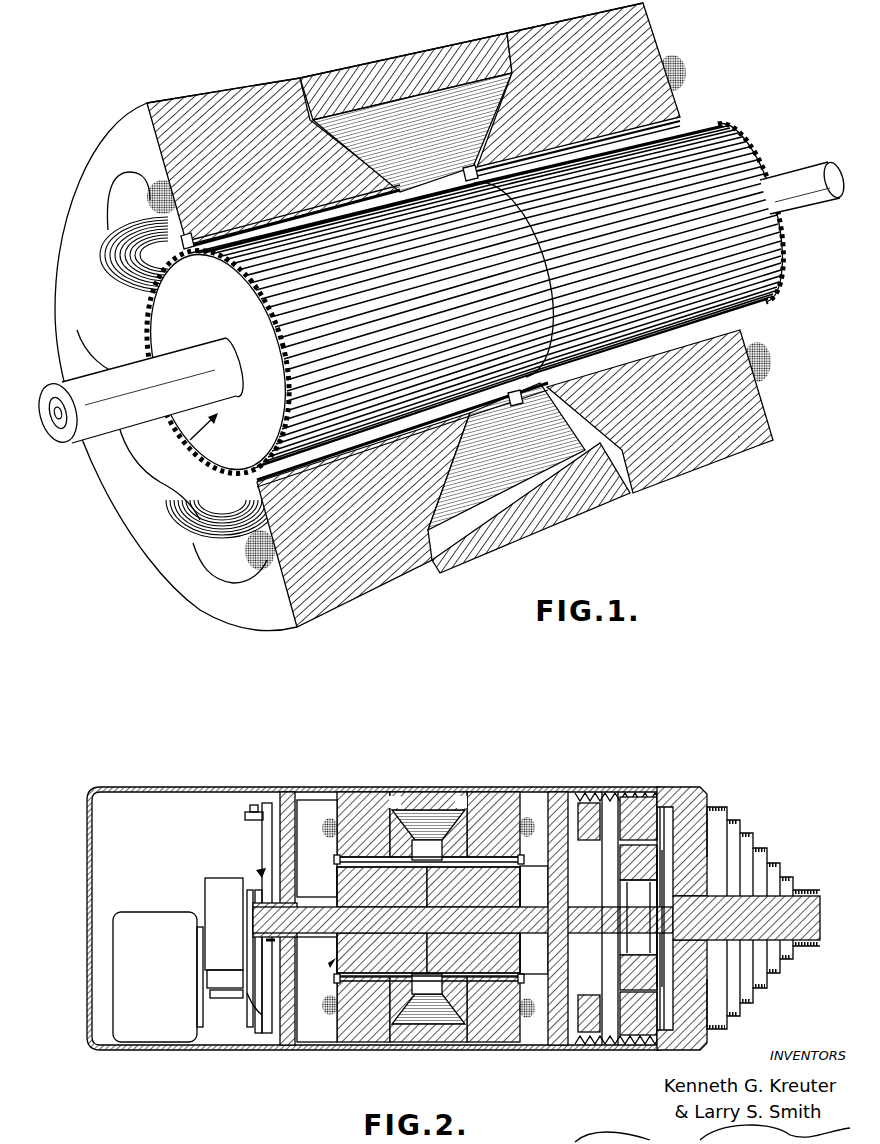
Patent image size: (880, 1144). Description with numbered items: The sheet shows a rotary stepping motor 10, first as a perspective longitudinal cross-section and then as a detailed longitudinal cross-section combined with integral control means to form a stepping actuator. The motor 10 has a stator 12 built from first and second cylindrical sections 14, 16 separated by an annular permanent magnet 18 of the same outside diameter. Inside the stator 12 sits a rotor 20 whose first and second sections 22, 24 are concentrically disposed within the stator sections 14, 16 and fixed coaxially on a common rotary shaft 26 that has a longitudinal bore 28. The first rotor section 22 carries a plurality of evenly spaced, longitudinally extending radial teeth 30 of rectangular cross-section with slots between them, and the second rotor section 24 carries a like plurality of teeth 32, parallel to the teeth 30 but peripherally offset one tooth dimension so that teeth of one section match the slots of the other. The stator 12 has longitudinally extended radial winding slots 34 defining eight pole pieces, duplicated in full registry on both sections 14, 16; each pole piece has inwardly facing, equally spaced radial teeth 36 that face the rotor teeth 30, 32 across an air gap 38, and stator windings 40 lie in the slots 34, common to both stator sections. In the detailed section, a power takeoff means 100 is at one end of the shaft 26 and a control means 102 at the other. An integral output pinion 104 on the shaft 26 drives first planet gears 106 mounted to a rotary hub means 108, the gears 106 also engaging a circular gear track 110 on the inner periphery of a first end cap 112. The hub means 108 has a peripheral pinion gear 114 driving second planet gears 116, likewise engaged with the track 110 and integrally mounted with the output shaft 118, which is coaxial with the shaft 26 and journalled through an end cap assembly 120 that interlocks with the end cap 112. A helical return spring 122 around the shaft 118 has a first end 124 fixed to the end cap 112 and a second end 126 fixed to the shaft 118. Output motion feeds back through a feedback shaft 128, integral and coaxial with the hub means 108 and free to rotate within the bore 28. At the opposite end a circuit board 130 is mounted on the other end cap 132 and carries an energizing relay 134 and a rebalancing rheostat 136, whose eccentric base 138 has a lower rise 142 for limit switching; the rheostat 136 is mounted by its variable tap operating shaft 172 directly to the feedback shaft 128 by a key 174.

In FIG. 1, the rotary stepping motor 10 is at (782, 63).
In FIG. 2, the rotary stepping motor 10 is at (416, 1077).
In FIG. 1, the stator 12 is at (557, 18).
In FIG. 1, the first cylindrical section 14 is at (245, 148).
In FIG. 2, the first cylindrical section 14 is at (355, 839).
In FIG. 1, the second cylindrical section 16 is at (609, 72).
In FIG. 2, the second cylindrical section 16 is at (482, 837).
In FIG. 1, the annular permanent magnet 18 is at (420, 85).
In FIG. 2, the annular permanent magnet 18 is at (419, 809).
In FIG. 1, the rotor 20 is at (172, 435).
In FIG. 2, the rotor 20 is at (333, 960).
In FIG. 1, the first rotor section 22 is at (399, 292).
In FIG. 2, the first rotor section 22 is at (380, 895).
In FIG. 1, the second rotor section 24 is at (650, 239).
In FIG. 2, the second rotor section 24 is at (468, 895).
In FIG. 1, the rotary shaft 26 is at (787, 173).
In FIG. 2, the rotary shaft 26 is at (446, 930).
In FIG. 1, the longitudinal bore 28 is at (60, 426).
In FIG. 2, the longitudinal bore 28 is at (489, 930).
In FIG. 1, the radial teeth 30 is at (214, 268).
In FIG. 2, the radial teeth 30 is at (427, 917).
In FIG. 1, the radial teeth 32 is at (770, 258).
In FIG. 2, the radial teeth 32 is at (524, 872).
In FIG. 1, the winding slots 34 is at (138, 209).
In FIG. 1, the stator teeth 36 is at (190, 232).
In FIG. 2, the stator teeth 36 is at (333, 860).
In FIG. 1, the air gap 38 is at (357, 212).
In FIG. 2, the air gap 38 is at (335, 866).
In FIG. 2, the stator windings 40 is at (320, 820).
In FIG. 2, the power takeoff means 100 is at (647, 786).
In FIG. 2, the control means 102 is at (190, 789).
In FIG. 2, the output pinion 104 is at (638, 900).
In FIG. 2, the first planet gears 106 is at (589, 917).
In FIG. 2, the rotary hub means 108 is at (638, 948).
In FIG. 2, the circular gear track 110 is at (609, 790).
In FIG. 2, the first end cap 112 is at (547, 790).
In FIG. 2, the peripheral pinion gear 114 is at (646, 943).
In FIG. 2, the second planet gears 116 is at (628, 976).
In FIG. 2, the output shaft 118 is at (745, 926).
In FIG. 2, the end cap assembly 120 is at (697, 786).
In FIG. 2, the helical return spring 122 is at (738, 824).
In FIG. 2, the first end 124 is at (713, 1025).
In FIG. 2, the second end 126 is at (788, 942).
In FIG. 2, the feedback shaft 128 is at (463, 920).
In FIG. 2, the circuit board 130 is at (262, 878).
In FIG. 2, the end cap 132 is at (320, 790).
In FIG. 2, the energizing relay 134 is at (140, 984).
In FIG. 2, the rebalancing rheostat 136 is at (224, 924).
In FIG. 2, the eccentric base 138 is at (247, 978).
In FIG. 2, the second rise 142 is at (247, 993).
In FIG. 2, the variable tap operating shaft 172 is at (266, 940).
In FIG. 2, the key 174 is at (266, 928).